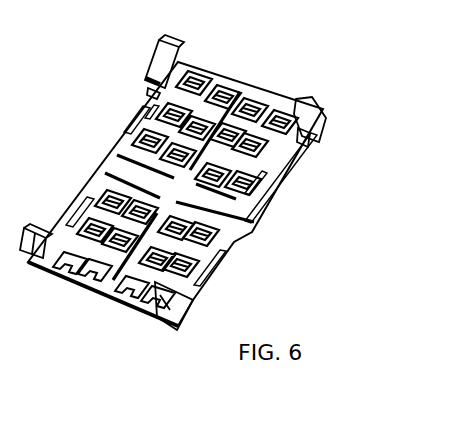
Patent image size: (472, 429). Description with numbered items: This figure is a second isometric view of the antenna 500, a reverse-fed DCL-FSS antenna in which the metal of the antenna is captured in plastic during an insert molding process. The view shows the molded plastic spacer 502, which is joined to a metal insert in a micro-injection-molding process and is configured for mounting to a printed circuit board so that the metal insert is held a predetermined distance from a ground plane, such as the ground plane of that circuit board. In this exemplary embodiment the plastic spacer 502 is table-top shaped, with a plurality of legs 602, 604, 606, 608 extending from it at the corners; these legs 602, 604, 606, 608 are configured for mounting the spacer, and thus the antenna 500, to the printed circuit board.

The antenna 500 is at (370, 213).
The molded plastic spacer 502 is at (135, 117).
The leg 602 is at (157, 57).
The leg 604 is at (300, 128).
The leg 606 is at (178, 313).
The leg 608 is at (47, 240).